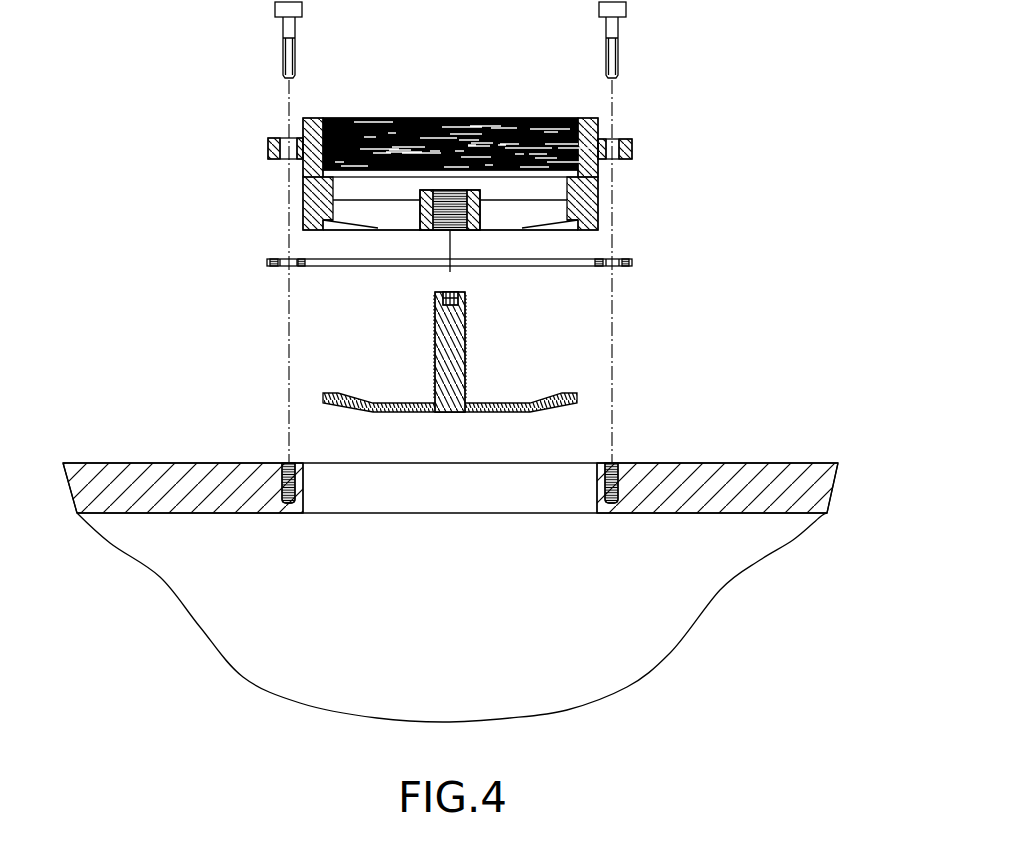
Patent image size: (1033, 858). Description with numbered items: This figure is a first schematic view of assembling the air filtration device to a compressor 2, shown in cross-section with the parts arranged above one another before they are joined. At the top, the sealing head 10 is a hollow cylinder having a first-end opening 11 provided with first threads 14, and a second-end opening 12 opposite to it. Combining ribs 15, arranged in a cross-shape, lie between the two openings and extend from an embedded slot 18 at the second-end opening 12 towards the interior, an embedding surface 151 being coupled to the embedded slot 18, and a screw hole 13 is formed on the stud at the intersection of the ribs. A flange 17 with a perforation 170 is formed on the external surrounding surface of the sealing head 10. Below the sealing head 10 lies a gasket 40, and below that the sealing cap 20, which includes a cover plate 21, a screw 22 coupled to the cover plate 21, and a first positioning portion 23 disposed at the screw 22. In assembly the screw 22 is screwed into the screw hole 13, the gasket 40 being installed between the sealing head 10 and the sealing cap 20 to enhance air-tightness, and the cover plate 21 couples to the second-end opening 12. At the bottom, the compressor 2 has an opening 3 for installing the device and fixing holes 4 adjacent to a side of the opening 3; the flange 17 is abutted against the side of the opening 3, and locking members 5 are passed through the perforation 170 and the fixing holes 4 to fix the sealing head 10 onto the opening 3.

The compressor 2 is at (768, 480).
The opening 3 is at (332, 500).
The fixing hole 4 is at (612, 460).
The locking member 5 is at (618, 46).
The sealing head 10 is at (463, 178).
The first-end opening 11 is at (305, 117).
The second-end opening 12 is at (300, 240).
The screw hole 13 is at (443, 232).
The first threads 14 is at (462, 117).
The combining ribs 15 is at (518, 218).
The embedding surface 151 is at (545, 223).
The flange 17 is at (632, 147).
The perforation 170 is at (613, 145).
The embedded slot 18 is at (332, 223).
The sealing cap 20 is at (407, 372).
The cover plate 21 is at (340, 407).
The screw 22 is at (467, 352).
The first positioning portion 23 is at (465, 295).
The gasket 40 is at (268, 260).